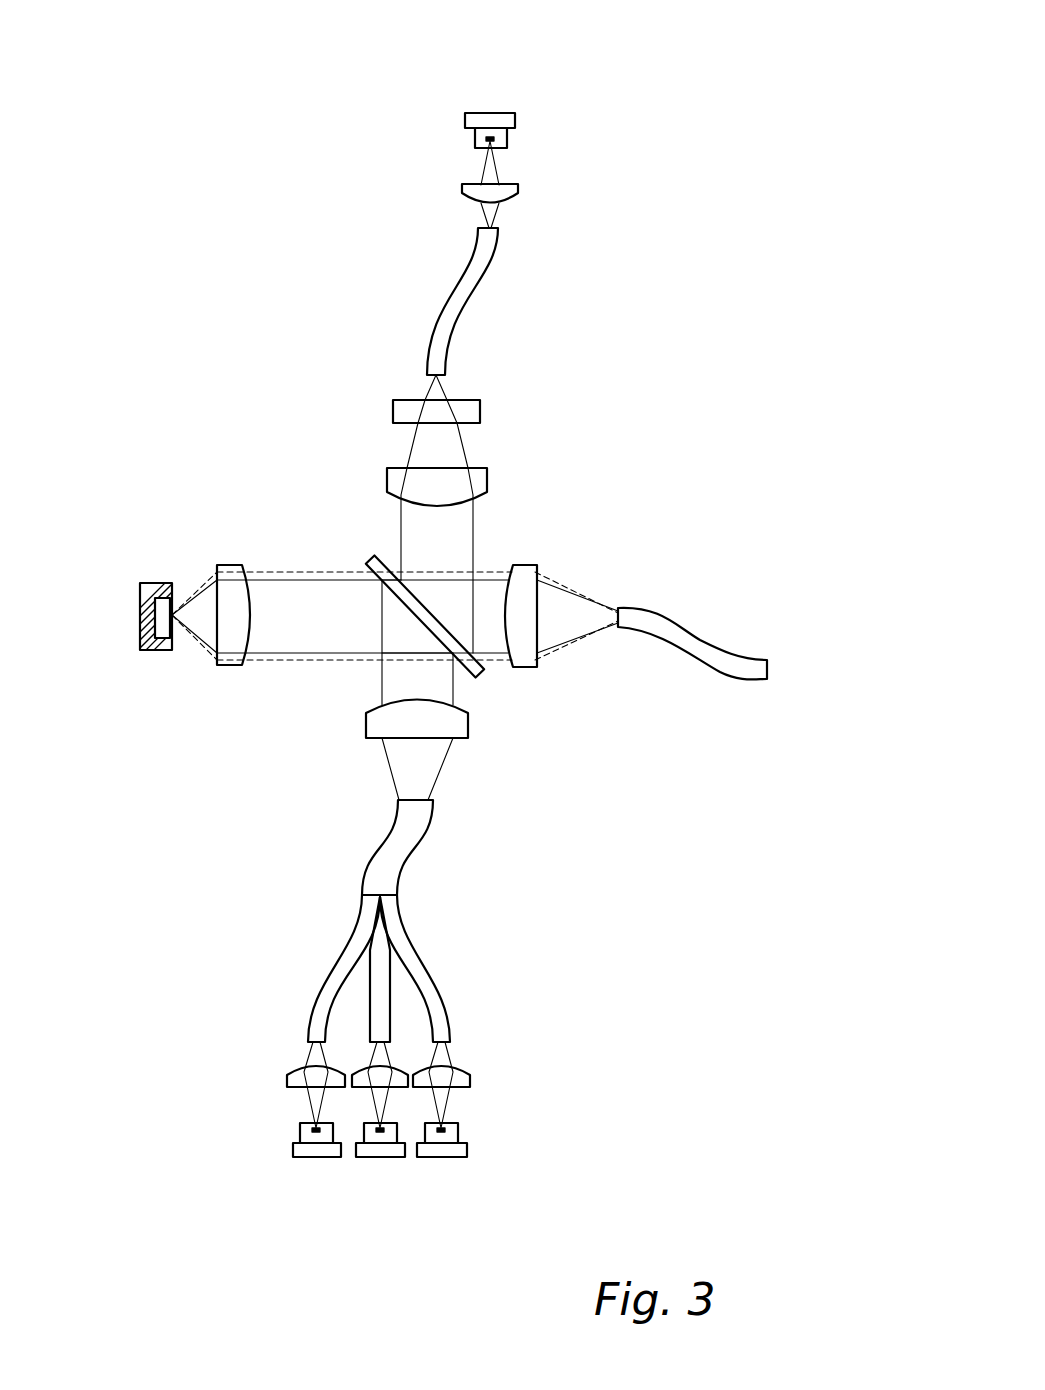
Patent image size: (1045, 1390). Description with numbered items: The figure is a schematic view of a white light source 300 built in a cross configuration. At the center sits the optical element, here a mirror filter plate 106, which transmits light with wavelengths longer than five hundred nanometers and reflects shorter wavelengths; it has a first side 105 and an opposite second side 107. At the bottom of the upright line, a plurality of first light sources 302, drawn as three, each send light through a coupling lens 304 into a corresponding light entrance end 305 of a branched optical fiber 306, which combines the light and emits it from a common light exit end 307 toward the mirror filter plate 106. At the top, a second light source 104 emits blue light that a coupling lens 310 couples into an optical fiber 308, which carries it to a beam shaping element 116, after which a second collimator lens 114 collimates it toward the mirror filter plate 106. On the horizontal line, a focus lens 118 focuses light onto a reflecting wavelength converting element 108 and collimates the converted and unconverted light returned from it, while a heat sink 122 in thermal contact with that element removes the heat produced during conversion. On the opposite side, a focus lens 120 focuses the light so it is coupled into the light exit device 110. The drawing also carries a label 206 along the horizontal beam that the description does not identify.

The white light source 300 is at (636, 79).
The second light source 104 is at (490, 113).
The coupling lens 310 is at (518, 192).
The optical fiber 308 is at (492, 277).
The beam shaping element 116 is at (482, 410).
The second collimator lens 114 is at (487, 483).
The second side 107 is at (393, 548).
The first side 105 is at (360, 577).
The mirror filter plate 106 is at (484, 673).
The heat sink 122 is at (145, 583).
The reflecting wavelength converting element 108 is at (172, 603).
The focus lens 118 is at (227, 668).
The light beam 206 is at (323, 670).
The focus lens 120 is at (530, 565).
The light exit device 110 is at (678, 618).
The common light exit end 307 is at (468, 725).
The branched optical fiber 306 is at (420, 857).
The light entrance ends 305 is at (370, 1030).
The coupling lenses 304 is at (400, 1062).
The first light sources 302 is at (317, 1157).